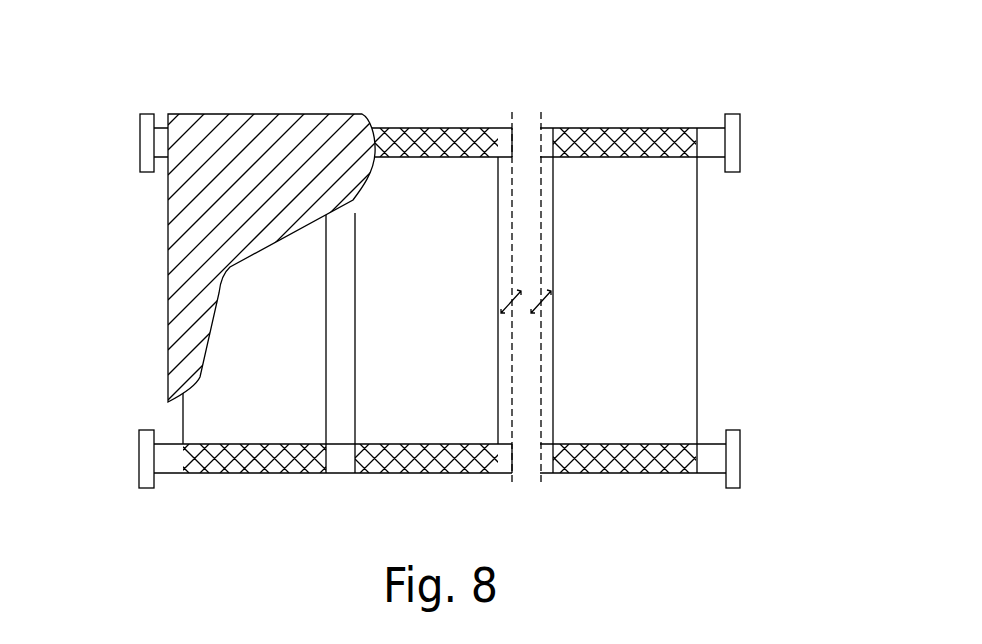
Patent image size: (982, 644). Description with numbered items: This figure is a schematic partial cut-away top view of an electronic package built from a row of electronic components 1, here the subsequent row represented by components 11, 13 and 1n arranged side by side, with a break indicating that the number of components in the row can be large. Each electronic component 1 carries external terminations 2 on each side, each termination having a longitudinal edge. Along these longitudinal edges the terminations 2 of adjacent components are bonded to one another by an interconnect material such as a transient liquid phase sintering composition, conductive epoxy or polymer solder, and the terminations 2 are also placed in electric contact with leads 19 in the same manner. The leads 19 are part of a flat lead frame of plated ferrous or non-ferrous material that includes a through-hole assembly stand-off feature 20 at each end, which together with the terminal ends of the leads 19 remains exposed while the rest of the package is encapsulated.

The electronic component 1 is at (440, 291).
The electronic component of subsequent row 11 is at (249, 423).
The electronic component of subsequent row 13 is at (419, 182).
The electronic component of subsequent row 1n is at (638, 188).
The external termination 2 is at (610, 518).
The lead 19 is at (692, 520).
The through-hole assembly stand-off feature 20 is at (770, 488).